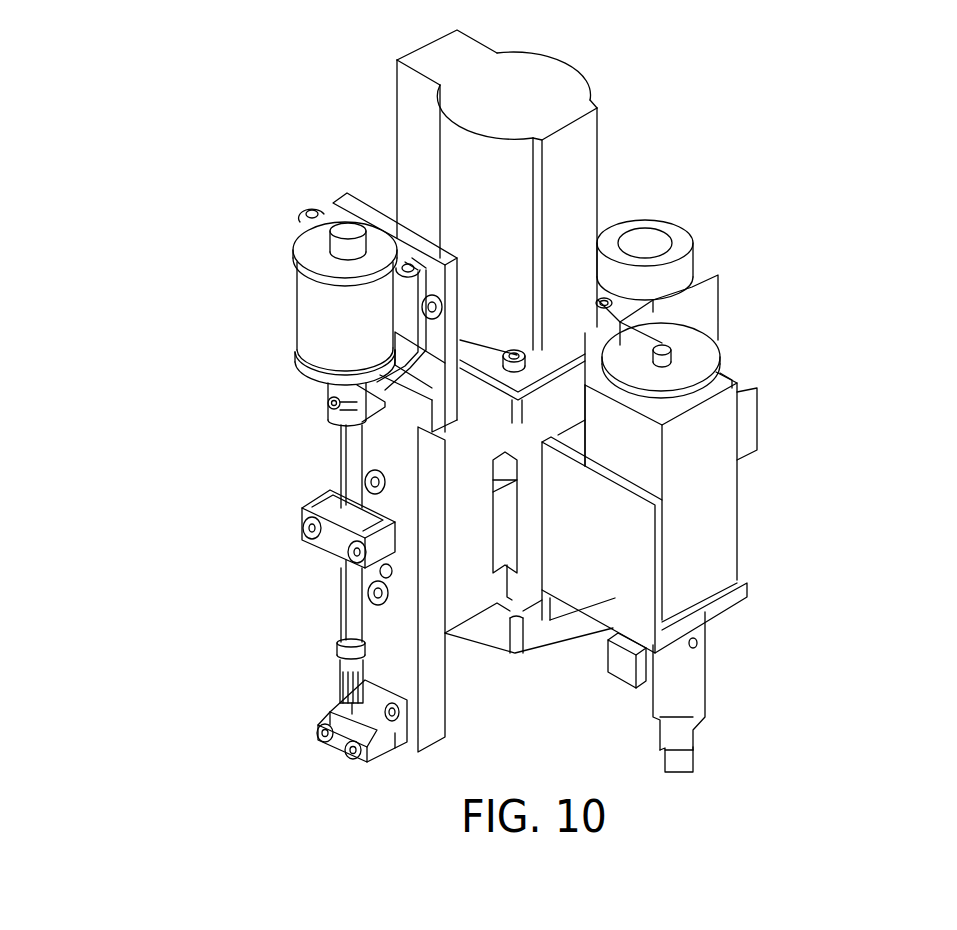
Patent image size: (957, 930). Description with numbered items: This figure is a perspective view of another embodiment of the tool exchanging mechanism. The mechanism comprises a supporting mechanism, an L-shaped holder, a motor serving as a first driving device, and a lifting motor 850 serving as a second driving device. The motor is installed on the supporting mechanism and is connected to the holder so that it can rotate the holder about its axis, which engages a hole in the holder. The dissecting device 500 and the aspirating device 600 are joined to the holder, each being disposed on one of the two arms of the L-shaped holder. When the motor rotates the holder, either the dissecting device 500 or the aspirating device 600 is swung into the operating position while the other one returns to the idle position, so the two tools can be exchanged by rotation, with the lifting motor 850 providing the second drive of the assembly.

The lifting motor 850 is at (705, 275).
The dissecting device 500 is at (705, 502).
The aspirating device 600 is at (330, 318).